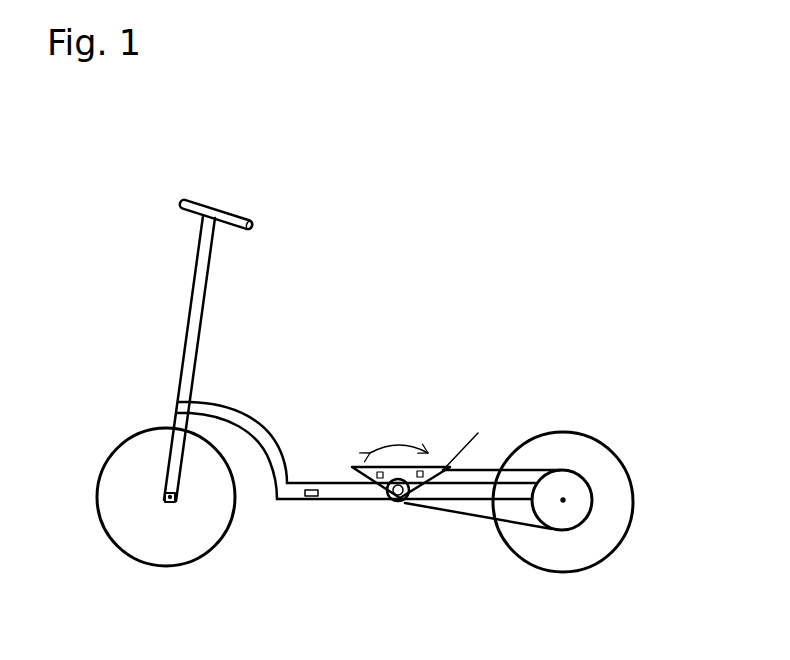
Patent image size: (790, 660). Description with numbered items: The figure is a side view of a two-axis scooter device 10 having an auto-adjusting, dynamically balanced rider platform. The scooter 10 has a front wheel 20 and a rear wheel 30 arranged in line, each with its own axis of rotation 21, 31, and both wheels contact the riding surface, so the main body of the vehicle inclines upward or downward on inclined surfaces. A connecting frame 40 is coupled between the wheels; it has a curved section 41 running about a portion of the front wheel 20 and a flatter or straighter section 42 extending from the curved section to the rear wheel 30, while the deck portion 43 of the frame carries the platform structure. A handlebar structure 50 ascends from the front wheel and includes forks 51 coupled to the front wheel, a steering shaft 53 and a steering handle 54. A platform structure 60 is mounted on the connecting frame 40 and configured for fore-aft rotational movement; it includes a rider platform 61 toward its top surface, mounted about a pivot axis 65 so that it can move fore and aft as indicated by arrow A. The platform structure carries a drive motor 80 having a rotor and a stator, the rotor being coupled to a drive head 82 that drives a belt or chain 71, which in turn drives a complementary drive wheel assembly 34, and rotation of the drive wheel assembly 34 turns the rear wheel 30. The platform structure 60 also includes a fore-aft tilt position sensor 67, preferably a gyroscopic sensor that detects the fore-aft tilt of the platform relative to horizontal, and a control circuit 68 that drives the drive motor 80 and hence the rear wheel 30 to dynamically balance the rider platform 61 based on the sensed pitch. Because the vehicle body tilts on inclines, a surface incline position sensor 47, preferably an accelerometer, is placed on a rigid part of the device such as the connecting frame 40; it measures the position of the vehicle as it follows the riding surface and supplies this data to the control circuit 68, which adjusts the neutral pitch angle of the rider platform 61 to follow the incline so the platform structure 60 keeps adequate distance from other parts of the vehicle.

The scooter device 10 is at (412, 163).
The front wheel 20 is at (167, 567).
The axis of rotation 21 is at (165, 495).
The rear wheel 30 is at (603, 560).
The axis of rotation 31 is at (570, 500).
The drive wheel assembly 34 is at (588, 478).
The connecting frame 40 is at (285, 524).
The curved section 41 is at (245, 418).
The flatter or straighter section 42 is at (467, 470).
The deck 43 is at (318, 482).
The surface incline position sensor 47 is at (312, 500).
The handlebar structure 50 is at (256, 198).
The forks 51 is at (167, 415).
The steering shaft 53 is at (188, 305).
The steering handle 54 is at (190, 215).
The platform structure 60 is at (353, 447).
The rider platform 61 is at (433, 467).
The pivot axis 65 is at (407, 505).
The fore-aft tilt position sensor 67 is at (362, 500).
The control circuit 68 is at (473, 433).
The belt or chain 71 is at (477, 520).
The drive motor 80 is at (397, 478).
The drive head 82 is at (390, 503).
The arrow A is at (413, 448).